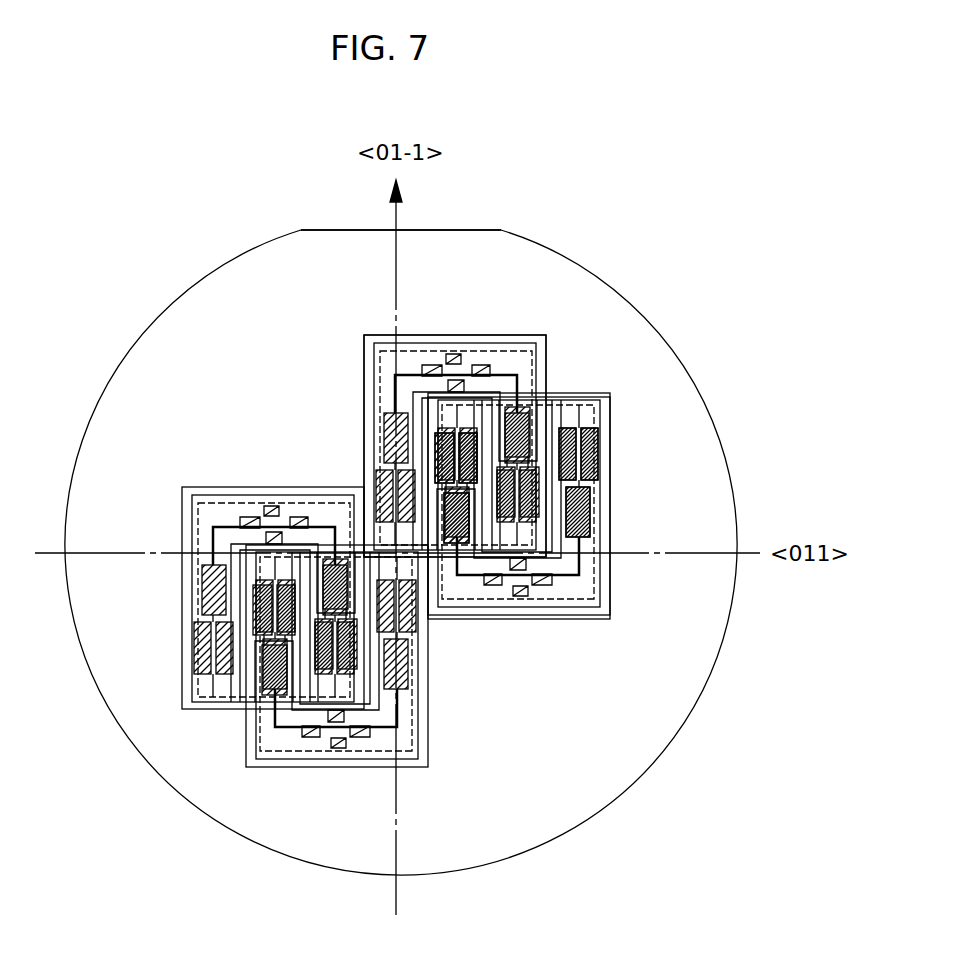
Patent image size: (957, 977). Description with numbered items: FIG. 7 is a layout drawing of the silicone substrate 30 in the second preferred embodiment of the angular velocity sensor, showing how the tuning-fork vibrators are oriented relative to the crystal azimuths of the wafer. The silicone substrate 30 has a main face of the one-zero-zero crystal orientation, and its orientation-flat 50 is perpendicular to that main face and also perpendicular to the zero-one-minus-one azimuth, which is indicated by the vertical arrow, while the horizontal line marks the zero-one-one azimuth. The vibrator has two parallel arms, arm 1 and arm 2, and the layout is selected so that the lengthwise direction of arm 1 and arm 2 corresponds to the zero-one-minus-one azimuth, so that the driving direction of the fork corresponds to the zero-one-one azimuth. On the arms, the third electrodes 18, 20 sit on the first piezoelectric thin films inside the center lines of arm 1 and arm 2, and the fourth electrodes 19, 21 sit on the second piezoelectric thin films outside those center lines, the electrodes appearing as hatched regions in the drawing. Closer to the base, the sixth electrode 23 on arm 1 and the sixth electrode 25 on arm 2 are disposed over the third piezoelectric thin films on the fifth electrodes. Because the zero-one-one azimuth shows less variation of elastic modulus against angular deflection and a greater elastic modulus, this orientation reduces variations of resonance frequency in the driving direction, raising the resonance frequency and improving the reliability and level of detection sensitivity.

The arm 1 is at (434, 410).
The arm 2 is at (562, 407).
The third electrode 18 is at (462, 436).
The fourth electrode 19 is at (445, 432).
The third electrode 20 is at (555, 437).
The fourth electrode 21 is at (595, 440).
The sixth electrode 23 is at (455, 545).
The sixth electrode 25 is at (598, 548).
The silicone substrate 30 is at (610, 765).
The orientation-flat 50 is at (365, 228).